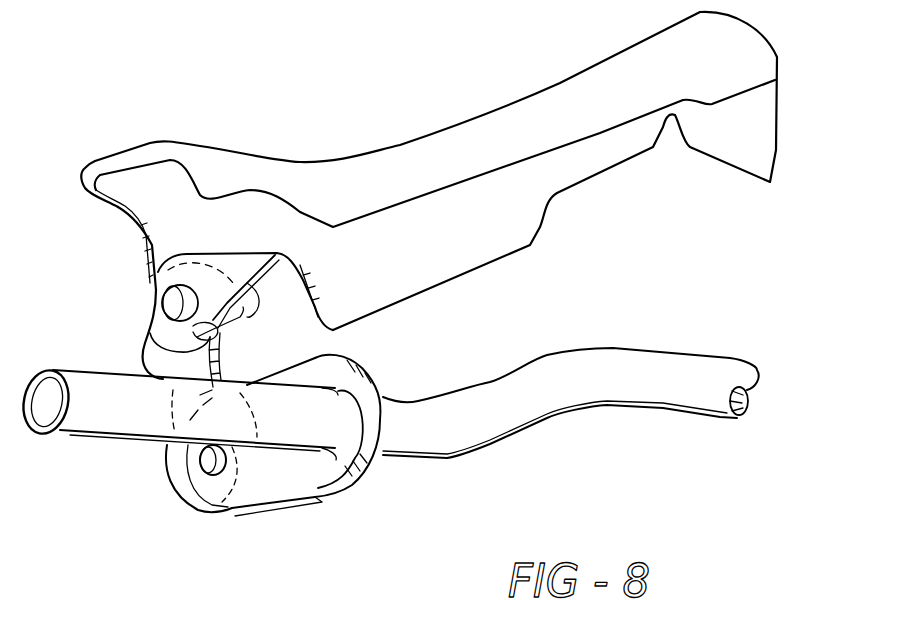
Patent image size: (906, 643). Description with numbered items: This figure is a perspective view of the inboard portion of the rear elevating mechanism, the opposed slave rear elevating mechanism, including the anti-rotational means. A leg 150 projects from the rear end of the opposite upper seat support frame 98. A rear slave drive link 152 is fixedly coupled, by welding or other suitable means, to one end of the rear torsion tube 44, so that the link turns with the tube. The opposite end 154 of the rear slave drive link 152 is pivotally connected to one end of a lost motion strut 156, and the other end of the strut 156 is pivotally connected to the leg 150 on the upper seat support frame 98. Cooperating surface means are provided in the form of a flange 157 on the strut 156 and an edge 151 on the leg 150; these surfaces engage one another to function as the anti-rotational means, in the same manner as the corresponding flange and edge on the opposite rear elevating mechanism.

The opposite upper seat support frame 98 is at (403, 157).
The leg 150 is at (233, 260).
The edge 151 is at (242, 303).
The flange 157 is at (207, 332).
The rear torsion tube 44 is at (558, 413).
The rear slave drive link 152 is at (312, 503).
The lost motion strut 156 is at (173, 472).
The opposite end 154 is at (232, 513).